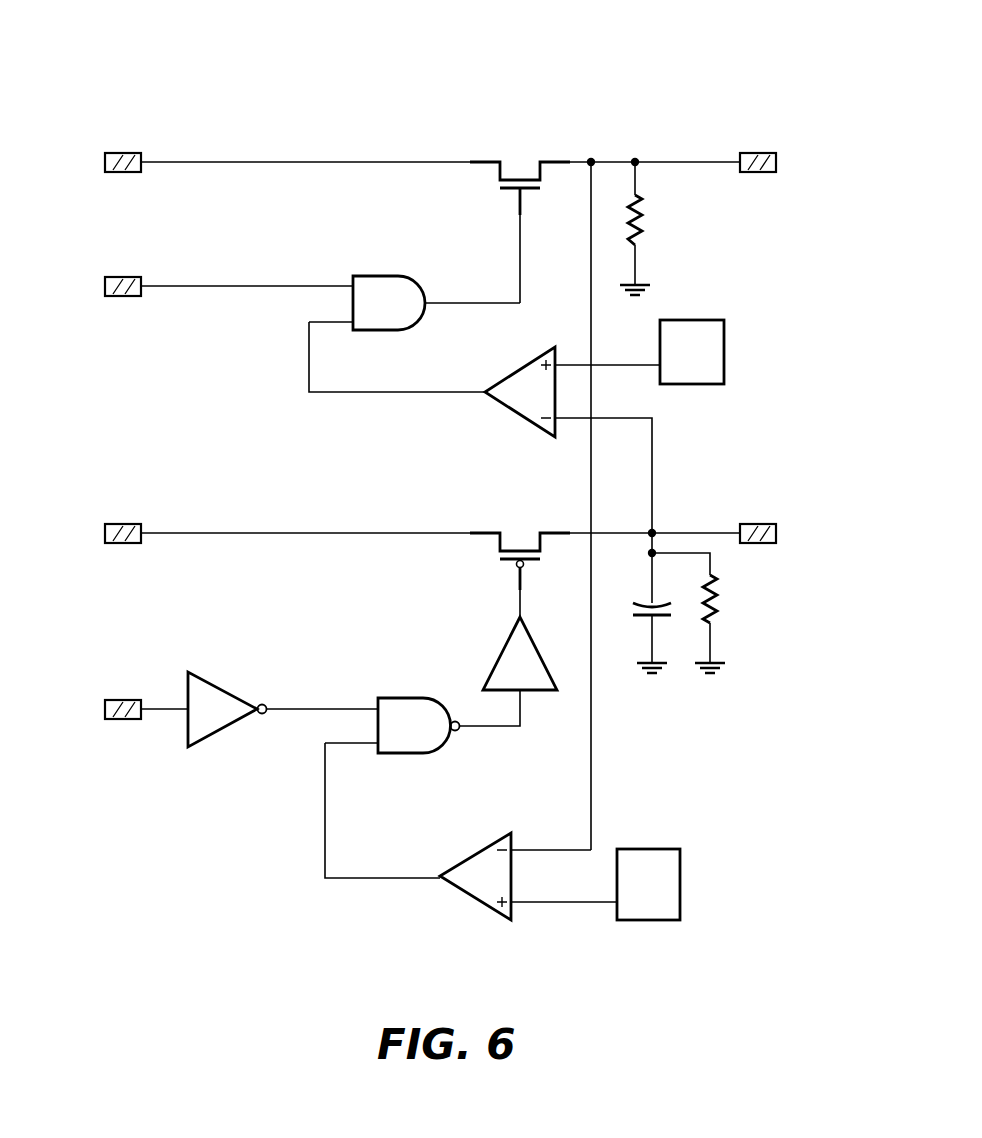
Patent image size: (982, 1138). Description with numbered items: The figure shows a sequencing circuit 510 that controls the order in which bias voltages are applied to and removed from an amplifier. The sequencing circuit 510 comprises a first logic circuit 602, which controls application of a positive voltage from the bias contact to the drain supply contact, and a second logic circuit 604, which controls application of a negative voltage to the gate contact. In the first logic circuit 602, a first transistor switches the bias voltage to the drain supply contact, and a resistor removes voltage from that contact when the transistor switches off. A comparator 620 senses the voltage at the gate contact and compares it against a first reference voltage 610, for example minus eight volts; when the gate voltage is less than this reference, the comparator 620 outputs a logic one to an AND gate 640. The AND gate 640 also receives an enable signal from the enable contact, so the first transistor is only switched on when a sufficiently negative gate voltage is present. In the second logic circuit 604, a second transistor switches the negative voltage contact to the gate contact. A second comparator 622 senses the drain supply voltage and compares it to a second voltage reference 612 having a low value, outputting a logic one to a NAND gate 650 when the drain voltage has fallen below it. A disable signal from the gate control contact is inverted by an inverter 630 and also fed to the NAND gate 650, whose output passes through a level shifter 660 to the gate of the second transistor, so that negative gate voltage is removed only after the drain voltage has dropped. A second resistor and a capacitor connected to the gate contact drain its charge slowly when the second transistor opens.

The sequencing circuit 510 is at (203, 66).
The first logic circuit 602 is at (323, 221).
The second logic circuit 604 is at (225, 497).
The AND gate 640 is at (389, 303).
The comparator 620 is at (520, 392).
The first reference voltage 610 is at (692, 352).
The level shifter 660 is at (520, 653).
The inverter 630 is at (227, 709).
The NAND gate 650 is at (419, 725).
The second comparator 622 is at (475, 876).
The second voltage reference 612 is at (648, 884).